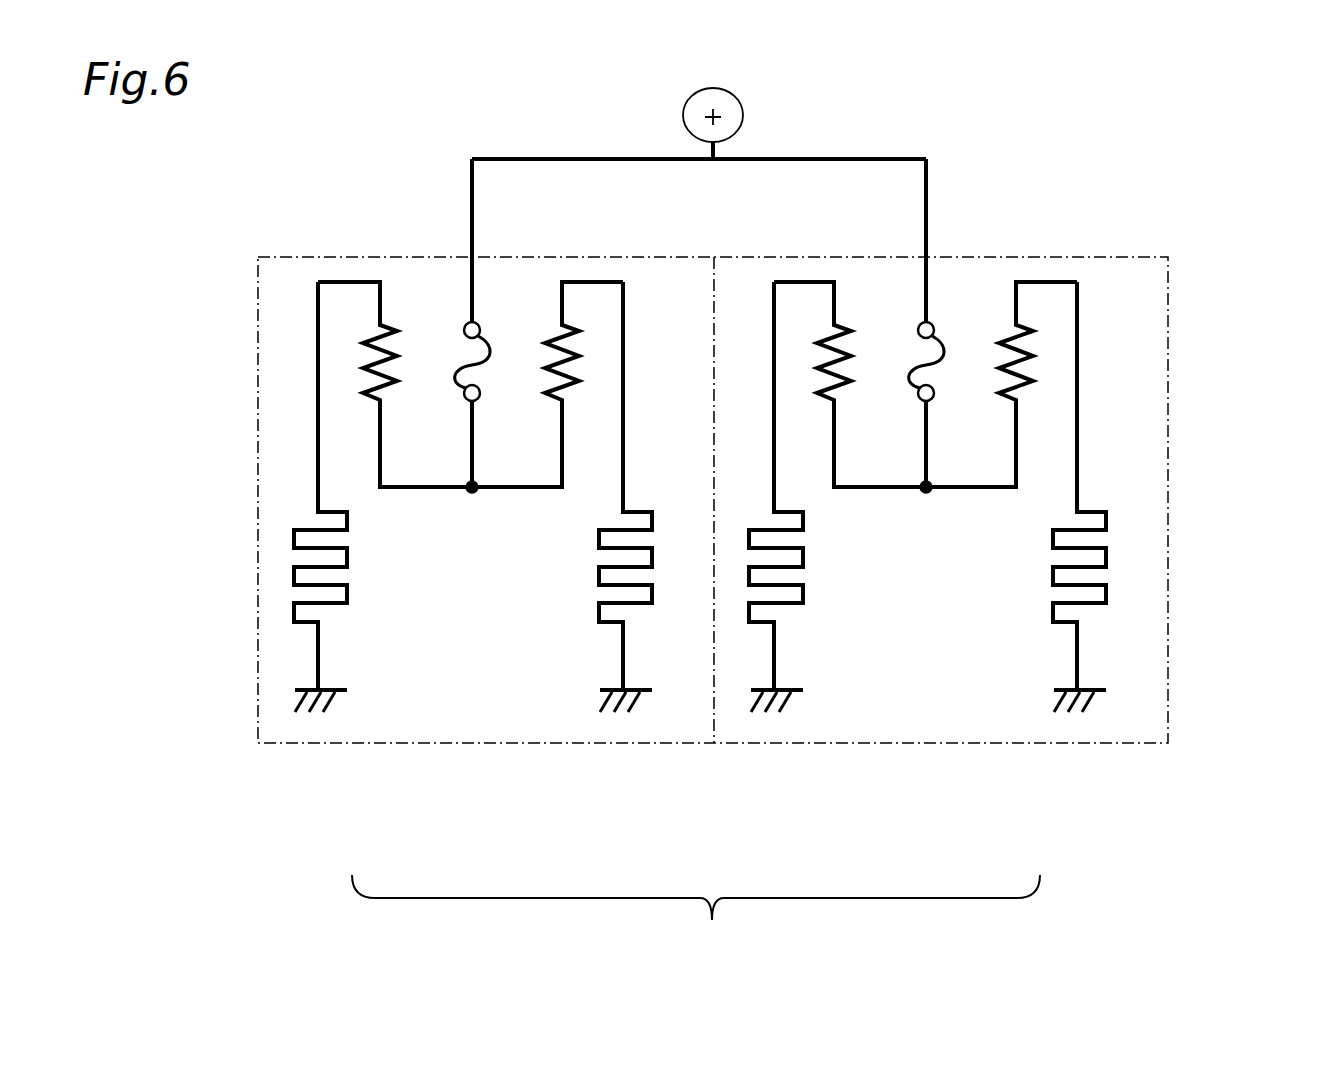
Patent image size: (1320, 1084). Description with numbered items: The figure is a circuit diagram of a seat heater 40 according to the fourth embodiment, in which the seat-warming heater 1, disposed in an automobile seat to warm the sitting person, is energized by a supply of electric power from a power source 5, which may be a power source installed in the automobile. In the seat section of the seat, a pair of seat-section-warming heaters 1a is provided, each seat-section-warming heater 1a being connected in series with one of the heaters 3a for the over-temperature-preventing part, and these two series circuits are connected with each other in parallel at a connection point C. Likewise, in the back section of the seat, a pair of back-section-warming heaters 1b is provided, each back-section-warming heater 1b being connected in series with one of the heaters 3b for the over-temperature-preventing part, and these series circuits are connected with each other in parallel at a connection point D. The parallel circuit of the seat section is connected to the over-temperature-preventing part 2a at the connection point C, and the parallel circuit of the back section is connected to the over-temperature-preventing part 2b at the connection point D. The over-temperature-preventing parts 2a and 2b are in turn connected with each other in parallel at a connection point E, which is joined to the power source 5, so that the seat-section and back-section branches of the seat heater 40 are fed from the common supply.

The seat-warming heater 1 is at (696, 915).
The seat-section-warming heater 1a is at (343, 605).
The back-section-warming heater 1b is at (800, 603).
The over-temperature-preventing part 2a is at (493, 340).
The over-temperature-preventing part 2b is at (950, 342).
The heater for the over-temperature-preventing part 3a is at (358, 333).
The heater for the over-temperature-preventing part 3b is at (812, 332).
The power source 5 is at (733, 100).
The seat heater 40 is at (1218, 239).
The connection point C is at (472, 487).
The connection point D is at (926, 487).
The connection point E is at (712, 162).